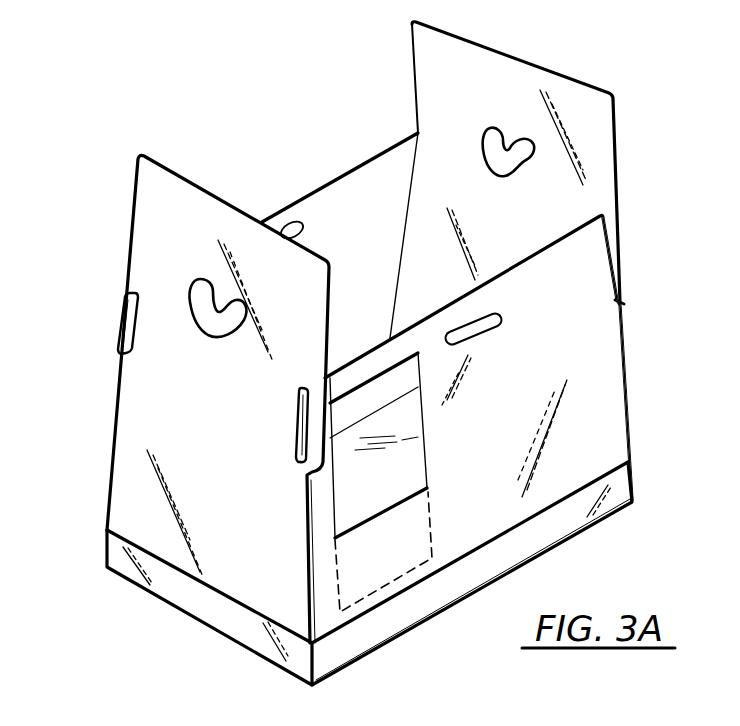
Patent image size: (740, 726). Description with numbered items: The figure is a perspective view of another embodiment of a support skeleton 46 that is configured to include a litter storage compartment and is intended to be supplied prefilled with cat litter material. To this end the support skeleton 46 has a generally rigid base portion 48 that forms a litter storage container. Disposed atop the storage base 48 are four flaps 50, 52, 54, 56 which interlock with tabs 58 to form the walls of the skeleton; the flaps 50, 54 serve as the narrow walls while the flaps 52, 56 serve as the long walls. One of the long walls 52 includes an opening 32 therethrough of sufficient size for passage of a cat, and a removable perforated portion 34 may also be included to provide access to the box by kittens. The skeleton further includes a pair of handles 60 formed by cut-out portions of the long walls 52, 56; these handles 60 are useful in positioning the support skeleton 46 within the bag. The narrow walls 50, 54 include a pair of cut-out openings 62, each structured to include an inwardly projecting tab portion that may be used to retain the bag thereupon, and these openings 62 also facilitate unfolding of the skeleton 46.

The support skeleton 46 is at (82, 472).
The base portion 48 is at (612, 498).
The flap (narrow wall) 50 is at (226, 414).
The flap (long wall) 52 is at (508, 419).
The flap (narrow wall) 54 is at (551, 222).
The flap (long wall) 56 is at (382, 182).
The tabs 58 is at (122, 312).
The handles 60 is at (292, 231).
The cut-out openings 62 is at (208, 305).
The opening 32 is at (391, 486).
The removable perforated portion 34 is at (405, 540).